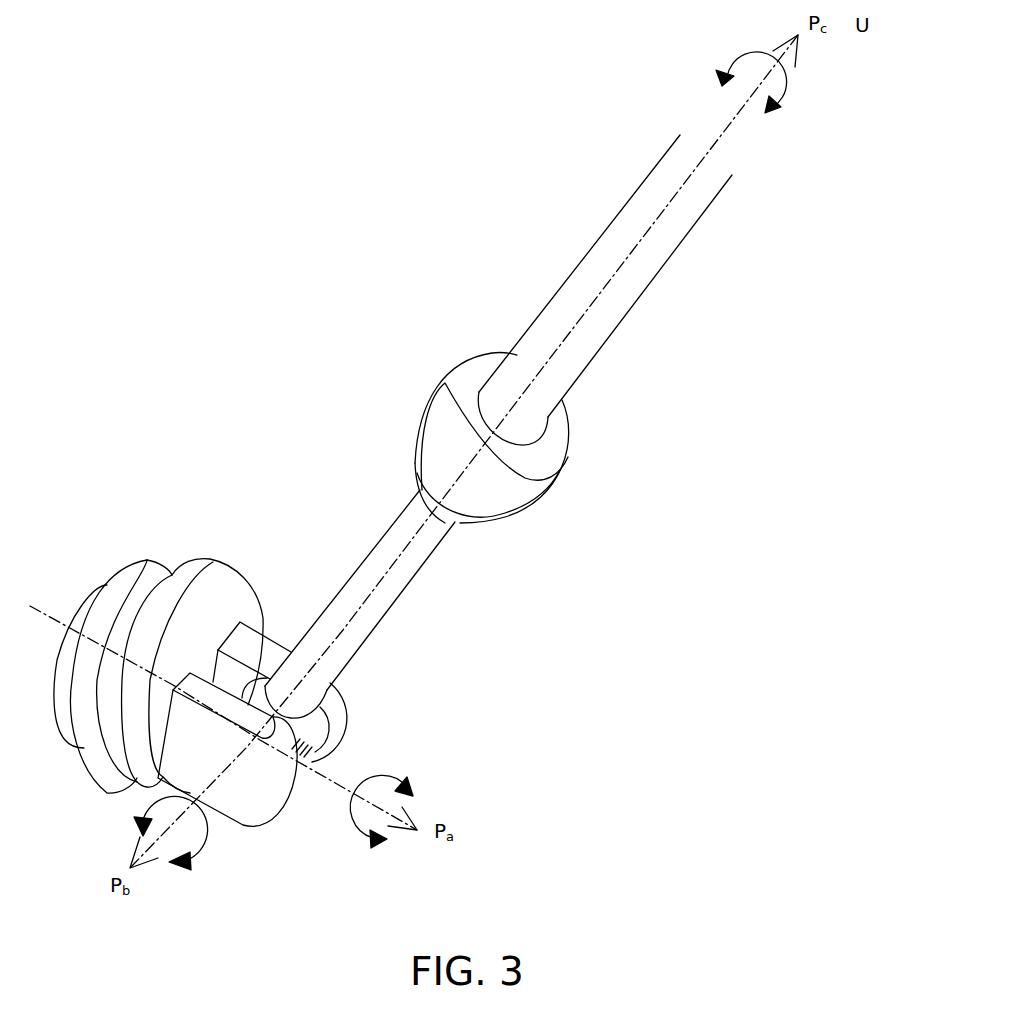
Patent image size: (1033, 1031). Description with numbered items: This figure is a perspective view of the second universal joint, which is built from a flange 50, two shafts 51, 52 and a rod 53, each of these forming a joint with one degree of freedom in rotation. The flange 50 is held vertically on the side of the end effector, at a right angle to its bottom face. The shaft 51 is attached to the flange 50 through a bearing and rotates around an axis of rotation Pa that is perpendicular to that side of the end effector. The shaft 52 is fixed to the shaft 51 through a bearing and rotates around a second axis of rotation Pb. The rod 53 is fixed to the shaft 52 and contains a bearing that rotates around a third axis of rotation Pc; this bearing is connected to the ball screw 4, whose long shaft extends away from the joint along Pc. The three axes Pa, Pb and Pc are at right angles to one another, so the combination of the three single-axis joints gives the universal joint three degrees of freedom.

The ball screw 4 is at (628, 273).
The flange 50 is at (173, 580).
The shaft 51 is at (92, 595).
The shaft 52 is at (288, 757).
The rod 53 is at (505, 490).